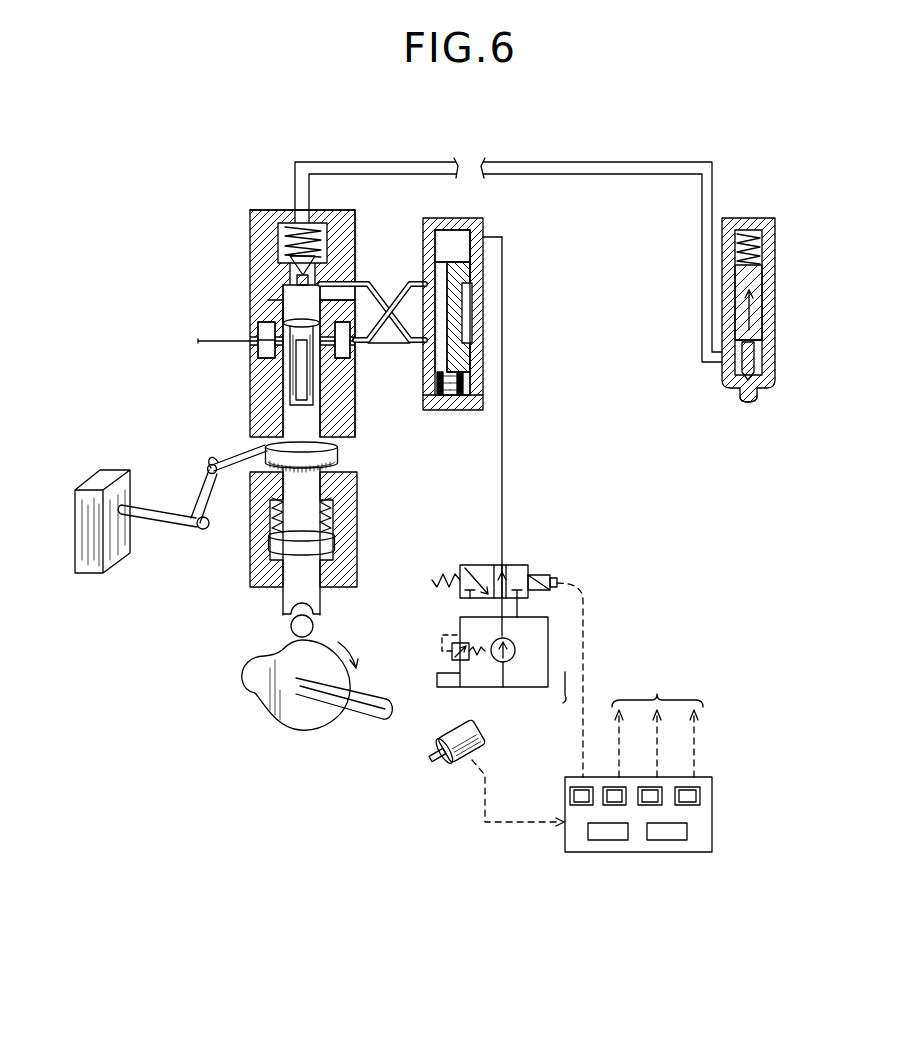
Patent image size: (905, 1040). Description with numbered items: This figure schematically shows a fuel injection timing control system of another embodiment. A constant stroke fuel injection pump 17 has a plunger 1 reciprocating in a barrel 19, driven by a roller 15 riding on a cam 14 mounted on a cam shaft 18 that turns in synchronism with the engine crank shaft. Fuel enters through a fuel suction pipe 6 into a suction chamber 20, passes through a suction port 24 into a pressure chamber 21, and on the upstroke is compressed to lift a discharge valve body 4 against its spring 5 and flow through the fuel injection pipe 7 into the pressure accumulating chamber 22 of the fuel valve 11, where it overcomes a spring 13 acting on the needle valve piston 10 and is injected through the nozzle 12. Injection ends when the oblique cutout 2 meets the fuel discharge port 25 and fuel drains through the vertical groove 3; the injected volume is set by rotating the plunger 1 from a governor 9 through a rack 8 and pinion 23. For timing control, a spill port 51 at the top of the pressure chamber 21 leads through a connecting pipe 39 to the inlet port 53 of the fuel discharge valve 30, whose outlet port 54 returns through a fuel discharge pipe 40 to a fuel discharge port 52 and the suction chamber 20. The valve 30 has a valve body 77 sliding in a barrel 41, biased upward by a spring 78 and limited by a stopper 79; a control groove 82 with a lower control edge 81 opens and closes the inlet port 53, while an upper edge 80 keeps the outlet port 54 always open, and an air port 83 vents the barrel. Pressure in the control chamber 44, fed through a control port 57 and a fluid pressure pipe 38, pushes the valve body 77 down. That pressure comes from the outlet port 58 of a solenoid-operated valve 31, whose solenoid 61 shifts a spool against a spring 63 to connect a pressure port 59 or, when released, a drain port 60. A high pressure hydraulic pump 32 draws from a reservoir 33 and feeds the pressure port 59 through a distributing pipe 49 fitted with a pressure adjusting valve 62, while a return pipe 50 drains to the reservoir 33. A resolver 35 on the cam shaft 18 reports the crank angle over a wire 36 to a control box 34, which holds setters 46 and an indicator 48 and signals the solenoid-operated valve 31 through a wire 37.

The plunger 1 is at (300, 345).
The oblique cutout 2 is at (296, 378).
The vertical groove 3 is at (292, 392).
The discharge valve body 4 is at (280, 257).
The spring 5 is at (305, 232).
The fuel suction pipe 6 is at (198, 340).
The fuel injection pipe 7 is at (348, 162).
The rack 8 is at (234, 492).
The governor 9 is at (120, 572).
The injection valve piston 10 is at (760, 282).
The fuel valve 11 is at (776, 316).
The nozzle 12 is at (752, 400).
The spring 13 is at (762, 240).
The cam 14 is at (268, 700).
The roller 15 is at (291, 626).
The fuel injection pump 17 is at (262, 190).
The cam shaft 18 is at (358, 710).
The barrel 19 is at (253, 220).
The suction chamber 20 is at (258, 350).
The pressure chamber 21 is at (270, 300).
The pressure accumulating chamber 22 is at (765, 362).
The pinion 23 is at (335, 455).
The suction port 24 is at (262, 330).
The fuel discharge port 25 is at (340, 405).
The fuel discharge valve 30 is at (486, 213).
The solenoid-operated valve 31 is at (553, 547).
The high pressure hydraulic pump 32 is at (500, 662).
The reservoir 33 is at (561, 705).
The control box 34 is at (717, 752).
The resolver 35 is at (458, 758).
The wire 36 is at (490, 830).
The wire 37 is at (585, 605).
The fluid pressure pipe 38 is at (503, 446).
The connecting pipe 39 is at (362, 296).
The fuel discharge pipe 40 is at (395, 302).
The barrel 41 is at (478, 302).
The control chamber 44 is at (455, 245).
The setter 46 is at (648, 788).
The indicator 48 is at (660, 838).
The distributing pipe 49 is at (515, 652).
The return pipe 50 is at (549, 660).
The spill port 51 is at (318, 287).
The fuel discharge port 52 is at (352, 338).
The inlet port 53 is at (412, 346).
The outlet port 54 is at (433, 292).
The control port 57 is at (486, 236).
The outlet port 58 is at (503, 565).
The pressure port 59 is at (488, 600).
The drain port 60 is at (520, 602).
The solenoid 61 is at (557, 582).
The pressure adjusting valve 62 is at (452, 655).
The spring 63 is at (437, 580).
The valve body 77 is at (457, 272).
The spring 78 is at (437, 397).
The stopper 79 is at (455, 398).
The edge 80 is at (433, 238).
The control edge 81 is at (460, 354).
The control groove 82 is at (466, 330).
The air port 83 is at (418, 368).